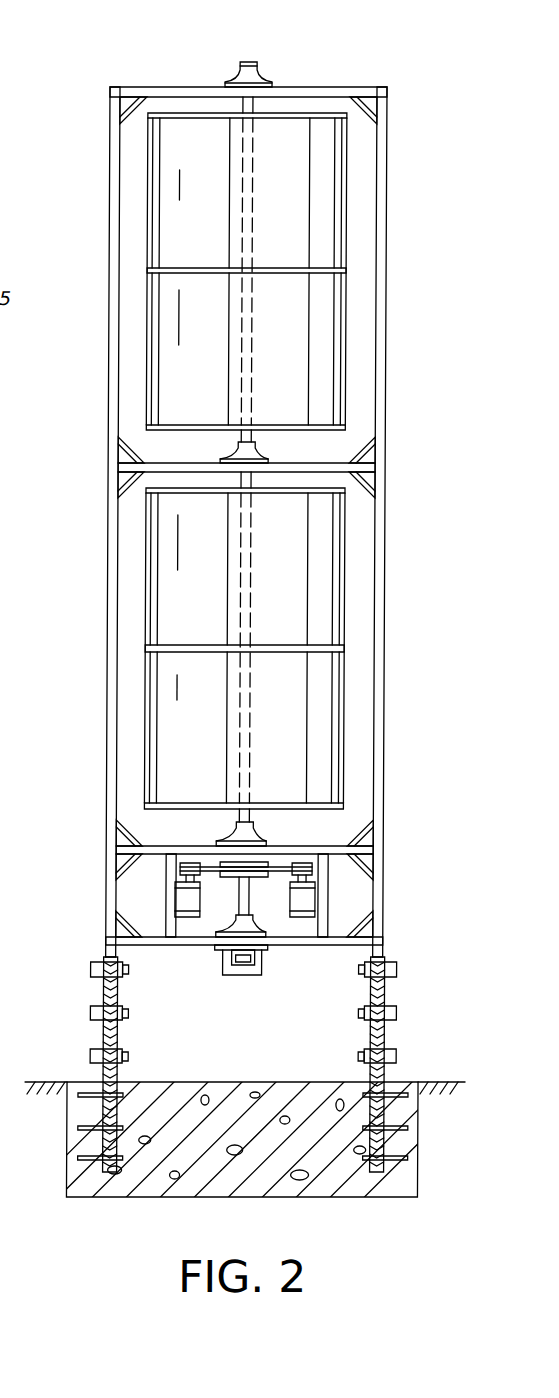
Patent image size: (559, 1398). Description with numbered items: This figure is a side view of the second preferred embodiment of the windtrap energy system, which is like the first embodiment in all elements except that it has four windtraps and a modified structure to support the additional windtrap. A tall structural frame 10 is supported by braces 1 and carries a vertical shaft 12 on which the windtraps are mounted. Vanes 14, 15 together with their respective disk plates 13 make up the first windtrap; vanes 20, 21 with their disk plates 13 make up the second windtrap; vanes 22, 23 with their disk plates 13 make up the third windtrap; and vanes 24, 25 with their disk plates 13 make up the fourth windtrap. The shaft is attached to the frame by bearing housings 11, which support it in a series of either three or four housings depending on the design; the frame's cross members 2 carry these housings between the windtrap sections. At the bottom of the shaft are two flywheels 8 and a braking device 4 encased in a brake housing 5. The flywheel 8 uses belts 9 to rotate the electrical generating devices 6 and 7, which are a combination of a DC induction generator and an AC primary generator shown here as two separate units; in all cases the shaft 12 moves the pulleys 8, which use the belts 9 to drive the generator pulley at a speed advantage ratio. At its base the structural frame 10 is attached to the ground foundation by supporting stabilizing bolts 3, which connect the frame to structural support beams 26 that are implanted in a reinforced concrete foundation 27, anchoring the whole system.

The brace 1 is at (109, 86).
The cross beam 2 is at (284, 463).
The stabilizing bolt 3 is at (93, 973).
The braking device 4 is at (236, 977).
The brake housing 5 is at (257, 977).
The electrical generating device 6 is at (309, 905).
The electrical generating device 7 is at (185, 899).
The flywheel 8 is at (257, 862).
The belt 9 is at (287, 864).
The structural frame 10 is at (100, 240).
The bearing housing 11 is at (240, 75).
The shaft 12 is at (250, 107).
The disk plate 13 is at (183, 118).
The vane 14 is at (176, 193).
The vane 15 is at (303, 181).
The vane 20 is at (176, 342).
The vane 21 is at (295, 348).
The vane 22 is at (298, 576).
The vane 23 is at (178, 563).
The vane 24 is at (298, 717).
The vane 25 is at (189, 698).
The structural support beam 26 is at (2, 1137).
The reinforced concrete foundation 27 is at (163, 1148).